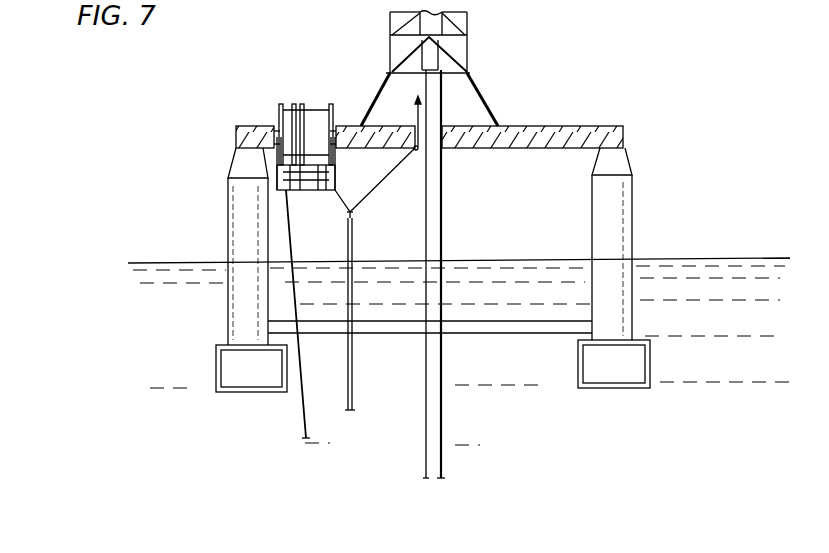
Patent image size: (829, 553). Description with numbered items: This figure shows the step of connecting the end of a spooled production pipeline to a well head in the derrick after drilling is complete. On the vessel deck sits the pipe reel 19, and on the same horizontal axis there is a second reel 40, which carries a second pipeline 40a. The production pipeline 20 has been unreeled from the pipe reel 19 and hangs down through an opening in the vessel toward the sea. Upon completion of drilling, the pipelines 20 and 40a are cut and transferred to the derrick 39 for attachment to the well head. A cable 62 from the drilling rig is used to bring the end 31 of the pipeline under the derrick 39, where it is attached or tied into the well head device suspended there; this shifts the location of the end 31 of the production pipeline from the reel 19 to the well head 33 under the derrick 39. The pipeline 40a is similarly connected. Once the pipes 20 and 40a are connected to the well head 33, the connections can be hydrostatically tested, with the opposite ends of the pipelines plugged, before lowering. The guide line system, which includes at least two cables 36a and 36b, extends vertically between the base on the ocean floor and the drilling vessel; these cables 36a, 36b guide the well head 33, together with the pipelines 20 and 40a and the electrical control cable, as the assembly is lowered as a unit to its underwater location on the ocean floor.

The pipe reel 19 is at (315, 108).
The second reel 40 is at (299, 127).
The pipeline 40a is at (303, 423).
The well head 33 is at (447, 42).
The derrick 39 is at (470, 73).
The end of the pipeline 31 is at (351, 210).
The cable 62 is at (369, 192).
The production pipeline 20 is at (354, 376).
The guide line cable 36a is at (425, 447).
The guide line cable 36b is at (444, 437).